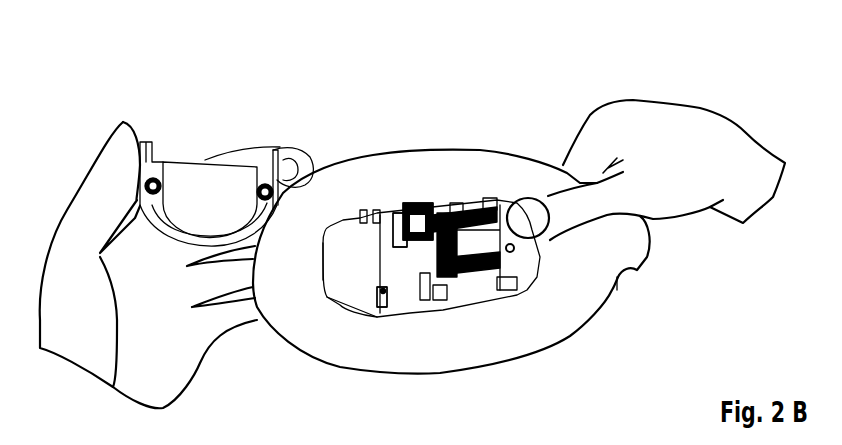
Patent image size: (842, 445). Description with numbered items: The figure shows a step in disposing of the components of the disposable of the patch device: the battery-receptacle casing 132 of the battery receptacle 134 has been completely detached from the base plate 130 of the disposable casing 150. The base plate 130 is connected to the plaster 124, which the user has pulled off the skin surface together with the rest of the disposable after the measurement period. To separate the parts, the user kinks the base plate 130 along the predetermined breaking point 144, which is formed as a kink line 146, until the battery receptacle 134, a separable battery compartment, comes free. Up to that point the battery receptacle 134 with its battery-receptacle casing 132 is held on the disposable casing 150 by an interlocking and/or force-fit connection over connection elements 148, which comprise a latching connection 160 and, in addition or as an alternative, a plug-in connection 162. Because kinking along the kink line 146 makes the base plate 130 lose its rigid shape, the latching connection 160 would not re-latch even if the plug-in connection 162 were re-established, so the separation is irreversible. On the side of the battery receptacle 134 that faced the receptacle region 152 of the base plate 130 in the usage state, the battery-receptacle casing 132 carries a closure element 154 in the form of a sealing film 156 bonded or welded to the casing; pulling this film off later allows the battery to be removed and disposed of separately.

The plaster 124 is at (570, 302).
The base plate 130 is at (438, 262).
The battery-receptacle casing 132 is at (259, 128).
The battery receptacle 134 is at (259, 128).
The predetermined breaking point 144 is at (431, 168).
The kink line 146 is at (382, 222).
The connection elements 148 is at (376, 321).
The disposable casing 150 is at (438, 262).
The receptacle region 152 is at (372, 280).
The closure element 154 is at (270, 153).
The sealing film 156 is at (222, 187).
The latching connection 160 is at (393, 290).
The plug-in connection 162 is at (372, 305).